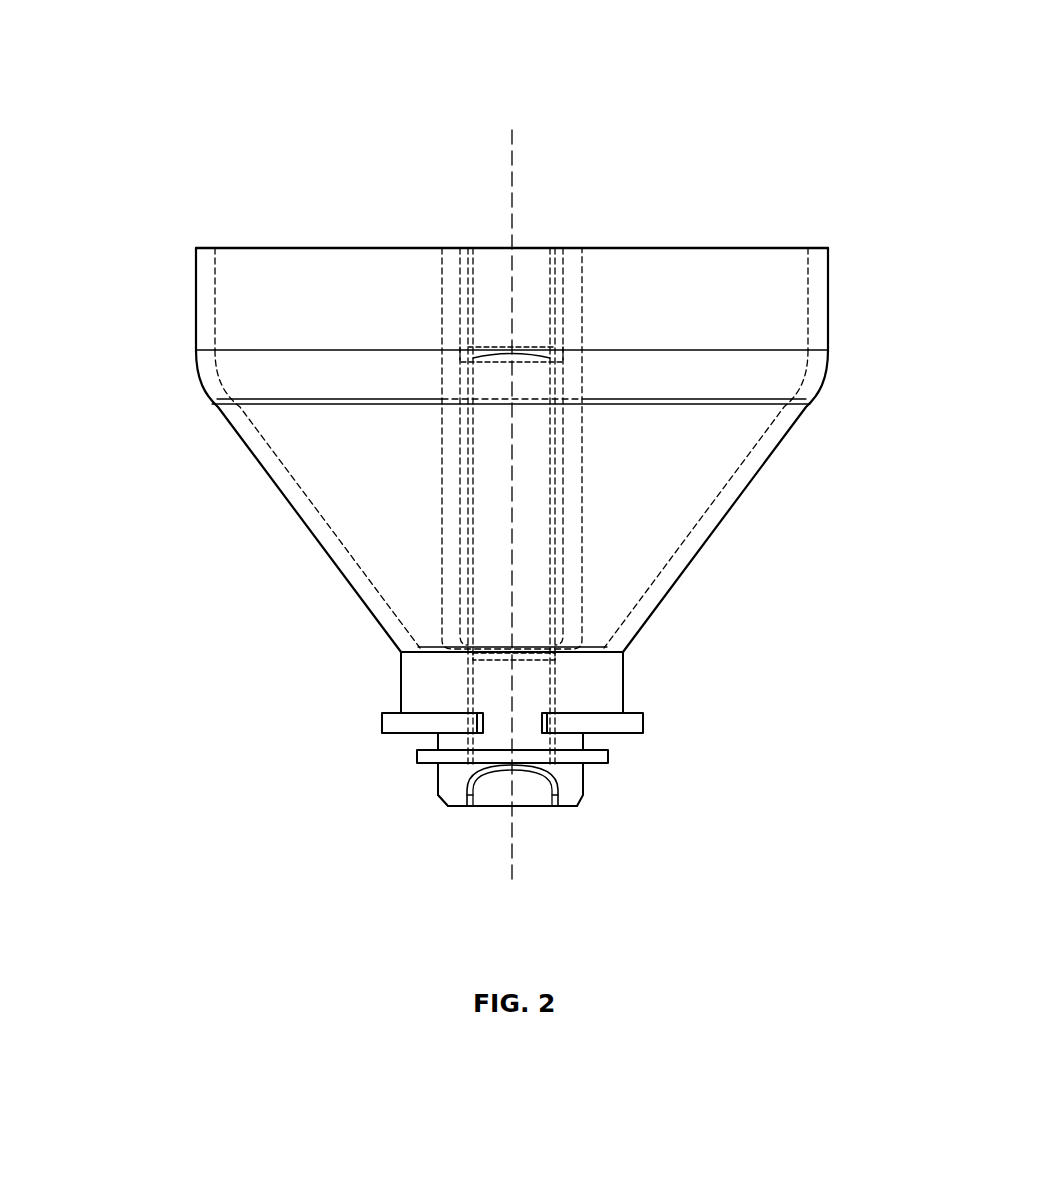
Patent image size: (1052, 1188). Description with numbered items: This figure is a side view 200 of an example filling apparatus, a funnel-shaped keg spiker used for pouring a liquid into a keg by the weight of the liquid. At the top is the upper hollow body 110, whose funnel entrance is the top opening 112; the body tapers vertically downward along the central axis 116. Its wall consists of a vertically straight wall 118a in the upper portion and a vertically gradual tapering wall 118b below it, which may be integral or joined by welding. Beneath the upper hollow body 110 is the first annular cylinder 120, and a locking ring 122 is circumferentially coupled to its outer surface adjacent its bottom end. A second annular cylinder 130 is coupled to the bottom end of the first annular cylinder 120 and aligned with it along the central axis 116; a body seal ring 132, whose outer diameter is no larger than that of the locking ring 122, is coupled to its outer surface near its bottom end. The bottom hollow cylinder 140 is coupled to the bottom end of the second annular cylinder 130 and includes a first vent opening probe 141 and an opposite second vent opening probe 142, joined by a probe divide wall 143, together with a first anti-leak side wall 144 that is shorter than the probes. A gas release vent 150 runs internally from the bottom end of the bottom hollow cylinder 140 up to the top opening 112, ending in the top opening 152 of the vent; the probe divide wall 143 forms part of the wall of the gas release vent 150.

The side view 200 is at (127, 103).
The upper hollow body 110 is at (196, 298).
The top opening 112 is at (323, 247).
The central axis 116 is at (513, 182).
The vertically straight wall 118a is at (828, 342).
The vertically gradual tapering wall 118b is at (730, 507).
The first annular cylinder 120 is at (624, 676).
The locking ring 122 is at (382, 722).
The second annular cylinder 130 is at (584, 740).
The body seal ring 132 is at (417, 758).
The bottom hollow cylinder 140 is at (584, 785).
The first vent opening probe 141 is at (448, 803).
The second vent opening probe 142 is at (572, 805).
The probe divide wall 143 is at (495, 797).
The first anti-leak side wall 144 is at (513, 768).
The gas release vent 150 is at (535, 424).
The top opening of the gas release vent 152 is at (525, 247).